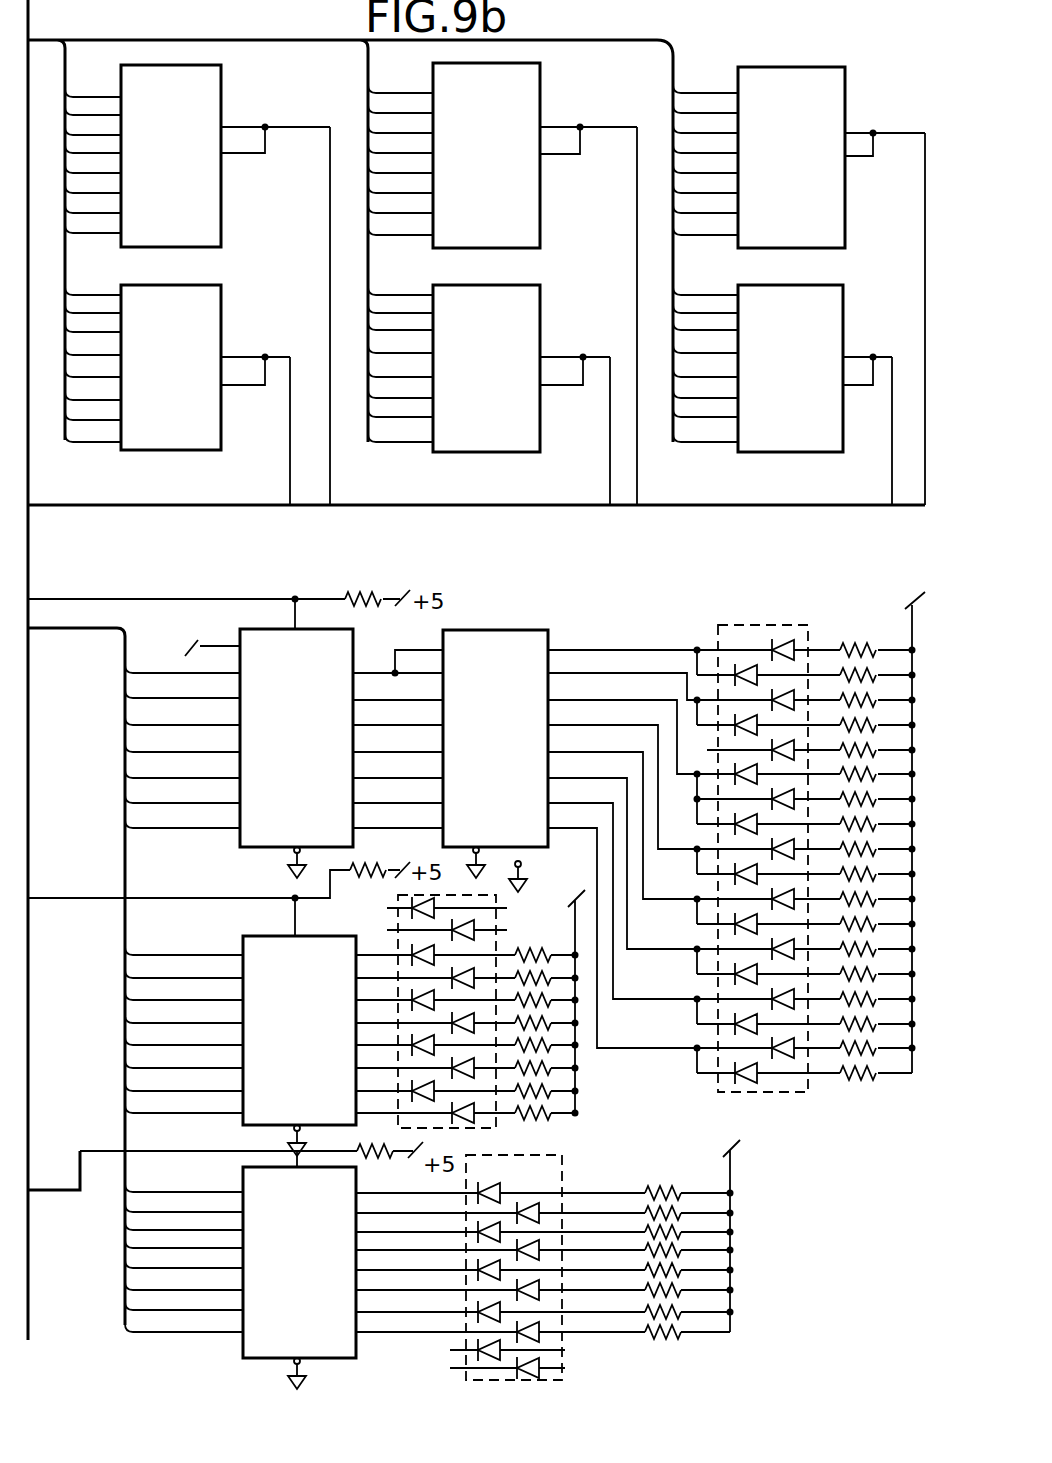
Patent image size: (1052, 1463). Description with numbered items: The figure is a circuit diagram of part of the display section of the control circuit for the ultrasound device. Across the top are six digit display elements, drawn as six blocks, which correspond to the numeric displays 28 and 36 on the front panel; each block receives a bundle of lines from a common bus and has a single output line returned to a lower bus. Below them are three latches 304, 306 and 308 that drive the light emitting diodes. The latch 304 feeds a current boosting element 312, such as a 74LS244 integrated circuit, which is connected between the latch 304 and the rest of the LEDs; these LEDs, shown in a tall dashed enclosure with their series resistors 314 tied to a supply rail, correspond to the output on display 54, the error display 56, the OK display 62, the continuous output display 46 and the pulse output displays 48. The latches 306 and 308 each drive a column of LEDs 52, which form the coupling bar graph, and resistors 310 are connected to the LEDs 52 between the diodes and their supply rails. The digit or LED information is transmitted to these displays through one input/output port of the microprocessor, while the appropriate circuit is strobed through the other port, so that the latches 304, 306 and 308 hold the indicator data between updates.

The numeric display 28 is at (225, 112).
The numeric display 36 is at (227, 303).
The latch 304 is at (353, 654).
The latch 306 is at (336, 938).
The latch 308 is at (243, 1180).
The current boosting element 312 is at (526, 630).
The resistors 314 is at (797, 842).
The output on display 54 is at (738, 665).
The error display 56 is at (746, 768).
The OK display 62 is at (748, 870).
The continuous output display 46 is at (748, 921).
The pulse output displays 48 is at (748, 968).
The LEDs 52 is at (445, 1132).
The resistors 310 is at (534, 954).